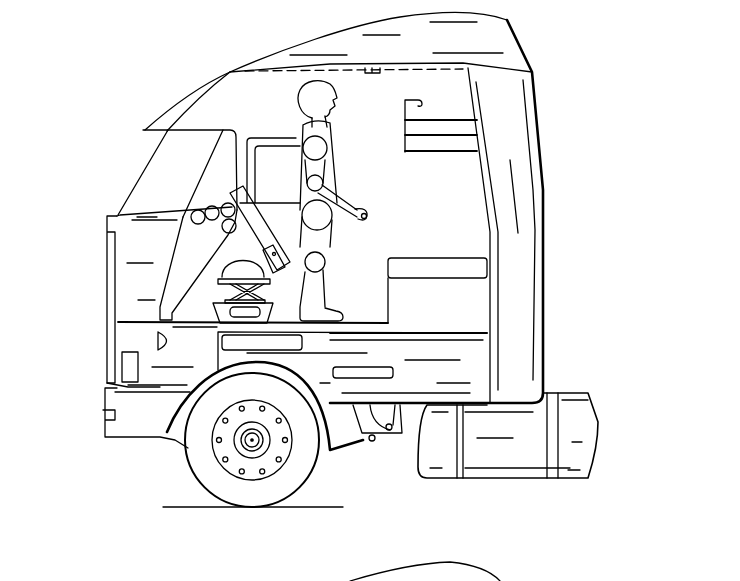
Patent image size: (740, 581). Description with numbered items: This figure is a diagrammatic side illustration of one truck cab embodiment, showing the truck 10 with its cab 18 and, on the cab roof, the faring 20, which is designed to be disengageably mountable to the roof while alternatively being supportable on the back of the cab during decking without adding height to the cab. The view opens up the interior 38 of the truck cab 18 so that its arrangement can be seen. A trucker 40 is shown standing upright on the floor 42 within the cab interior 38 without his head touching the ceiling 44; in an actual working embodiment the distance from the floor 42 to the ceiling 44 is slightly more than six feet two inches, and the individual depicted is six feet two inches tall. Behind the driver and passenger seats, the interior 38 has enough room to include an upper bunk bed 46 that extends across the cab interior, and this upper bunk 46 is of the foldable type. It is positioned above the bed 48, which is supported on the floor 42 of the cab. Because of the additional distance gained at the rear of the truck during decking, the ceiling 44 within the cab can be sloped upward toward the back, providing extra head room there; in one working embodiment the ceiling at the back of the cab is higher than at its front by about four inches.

The truck 10 is at (580, 54).
The cab 18 is at (120, 245).
The faring 20 is at (387, 43).
The interior 38 is at (430, 207).
The trucker 40 is at (333, 167).
The floor 42 is at (367, 323).
The ceiling 44 is at (388, 72).
The upper bunk bed 46 is at (448, 122).
The bed 48 is at (458, 260).